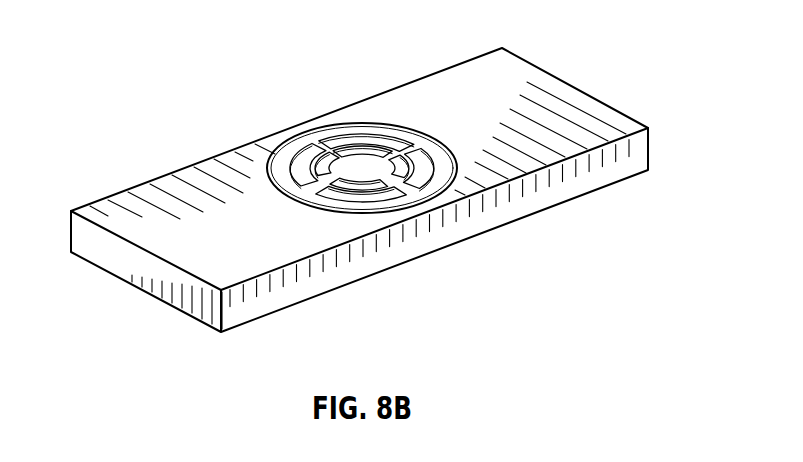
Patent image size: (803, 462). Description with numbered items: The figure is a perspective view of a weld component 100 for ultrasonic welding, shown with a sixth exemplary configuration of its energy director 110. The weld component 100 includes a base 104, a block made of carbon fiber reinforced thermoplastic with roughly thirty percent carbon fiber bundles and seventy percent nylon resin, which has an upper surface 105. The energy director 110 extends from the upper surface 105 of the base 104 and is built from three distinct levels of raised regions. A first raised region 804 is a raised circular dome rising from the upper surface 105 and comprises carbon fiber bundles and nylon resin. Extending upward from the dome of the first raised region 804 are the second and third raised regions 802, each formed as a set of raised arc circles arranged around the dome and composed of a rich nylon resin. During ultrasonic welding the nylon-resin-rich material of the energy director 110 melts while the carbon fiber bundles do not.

The weld component 100 is at (104, 69).
The base 104 is at (648, 161).
The upper surface 105 is at (516, 63).
The energy director 110 is at (280, 143).
The first raised region 804 is at (356, 160).
The second and third raised regions 802 is at (462, 331).